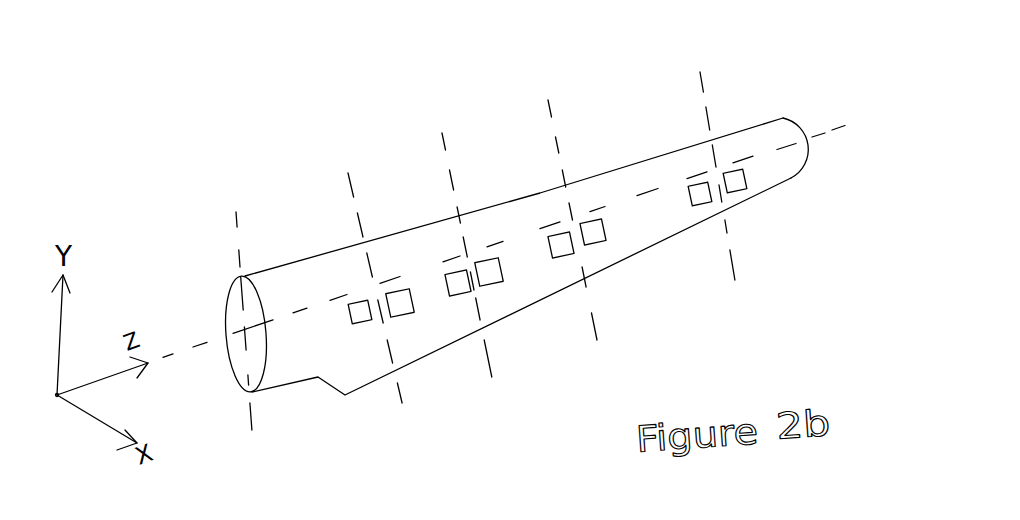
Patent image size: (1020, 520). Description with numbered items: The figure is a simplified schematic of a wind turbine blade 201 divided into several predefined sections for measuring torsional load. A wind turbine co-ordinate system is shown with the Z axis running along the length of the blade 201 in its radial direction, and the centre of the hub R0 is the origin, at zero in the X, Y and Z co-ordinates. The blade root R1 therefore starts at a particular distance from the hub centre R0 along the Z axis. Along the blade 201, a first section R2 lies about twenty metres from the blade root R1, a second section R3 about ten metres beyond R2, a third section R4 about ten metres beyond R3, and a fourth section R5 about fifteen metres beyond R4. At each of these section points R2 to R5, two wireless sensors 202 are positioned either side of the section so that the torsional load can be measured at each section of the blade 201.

The blade 201 is at (343, 396).
The wireless sensors 202 is at (360, 323).
The centre of the hub R0 is at (39, 414).
The blade root R1 is at (238, 299).
The first section R2 is at (361, 267).
The second section R3 is at (460, 233).
The third section R4 is at (560, 199).
The fourth section R5 is at (708, 153).